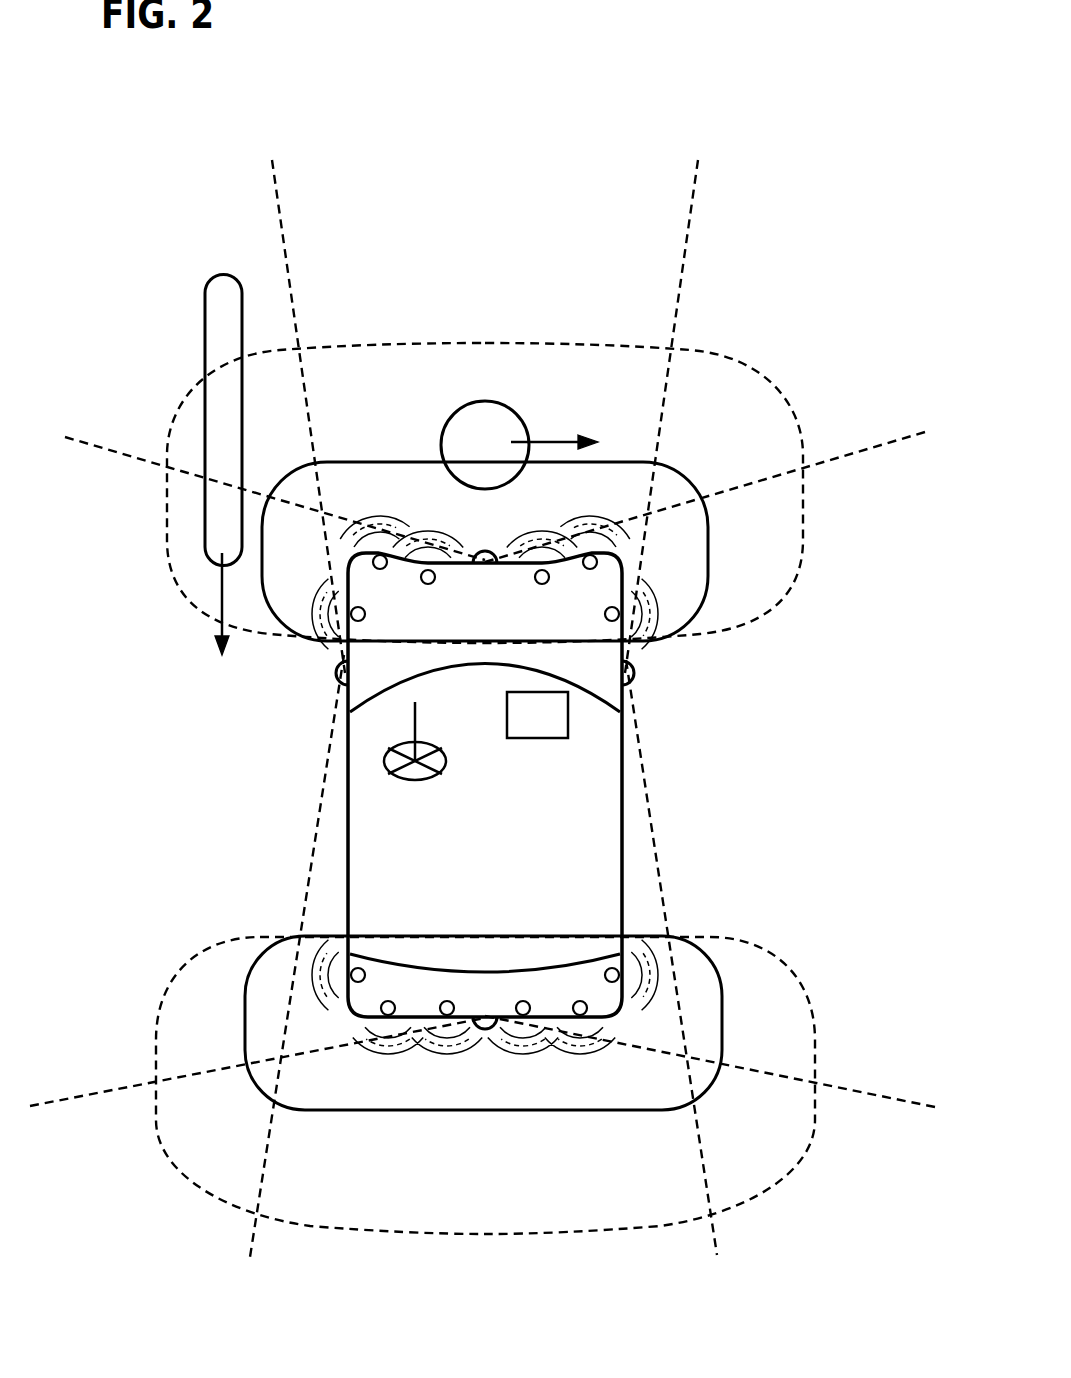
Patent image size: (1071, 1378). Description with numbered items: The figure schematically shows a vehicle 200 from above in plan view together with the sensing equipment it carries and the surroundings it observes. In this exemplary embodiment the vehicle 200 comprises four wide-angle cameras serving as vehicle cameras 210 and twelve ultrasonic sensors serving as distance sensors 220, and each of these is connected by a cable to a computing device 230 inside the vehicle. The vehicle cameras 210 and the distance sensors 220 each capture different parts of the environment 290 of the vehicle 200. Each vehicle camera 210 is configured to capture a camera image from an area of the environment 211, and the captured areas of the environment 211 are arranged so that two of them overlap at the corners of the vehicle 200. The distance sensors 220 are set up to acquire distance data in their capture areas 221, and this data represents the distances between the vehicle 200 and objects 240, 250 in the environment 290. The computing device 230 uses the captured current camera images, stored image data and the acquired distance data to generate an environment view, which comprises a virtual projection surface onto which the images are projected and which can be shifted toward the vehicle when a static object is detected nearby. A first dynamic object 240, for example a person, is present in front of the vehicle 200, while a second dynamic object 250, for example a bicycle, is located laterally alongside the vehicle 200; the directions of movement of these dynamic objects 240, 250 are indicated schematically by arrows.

The vehicle 200 is at (508, 922).
The vehicle camera 210 is at (480, 553).
The area of the environment 211 is at (505, 235).
The distance sensor 220 is at (381, 569).
The capture area 221 is at (380, 371).
The computing device 230 is at (535, 702).
The first dynamic object 240 is at (497, 425).
The second dynamic object 250 is at (215, 330).
The environment 290 is at (401, 87).